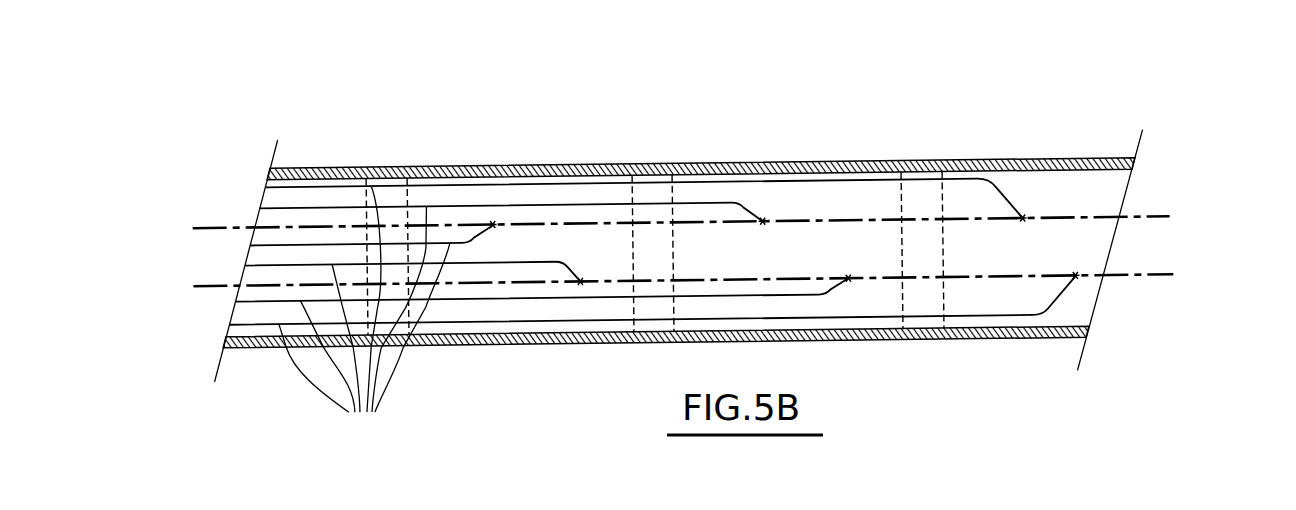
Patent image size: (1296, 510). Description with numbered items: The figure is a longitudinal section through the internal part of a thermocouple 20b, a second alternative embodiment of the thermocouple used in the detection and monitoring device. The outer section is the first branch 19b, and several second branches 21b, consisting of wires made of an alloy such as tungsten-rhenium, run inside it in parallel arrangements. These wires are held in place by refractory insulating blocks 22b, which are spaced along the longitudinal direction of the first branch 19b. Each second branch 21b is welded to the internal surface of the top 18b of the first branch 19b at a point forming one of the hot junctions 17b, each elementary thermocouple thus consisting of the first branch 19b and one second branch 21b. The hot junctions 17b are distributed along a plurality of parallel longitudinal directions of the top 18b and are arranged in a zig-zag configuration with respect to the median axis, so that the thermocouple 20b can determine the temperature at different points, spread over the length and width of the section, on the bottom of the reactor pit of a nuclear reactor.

The thermocouple 20b is at (806, 130).
The first branch 19b is at (627, 163).
The top of the first branch 18b is at (1088, 193).
The hot junctions 17b is at (493, 224).
The second branches 21b is at (364, 315).
The refractory insulating blocks 22b is at (922, 300).